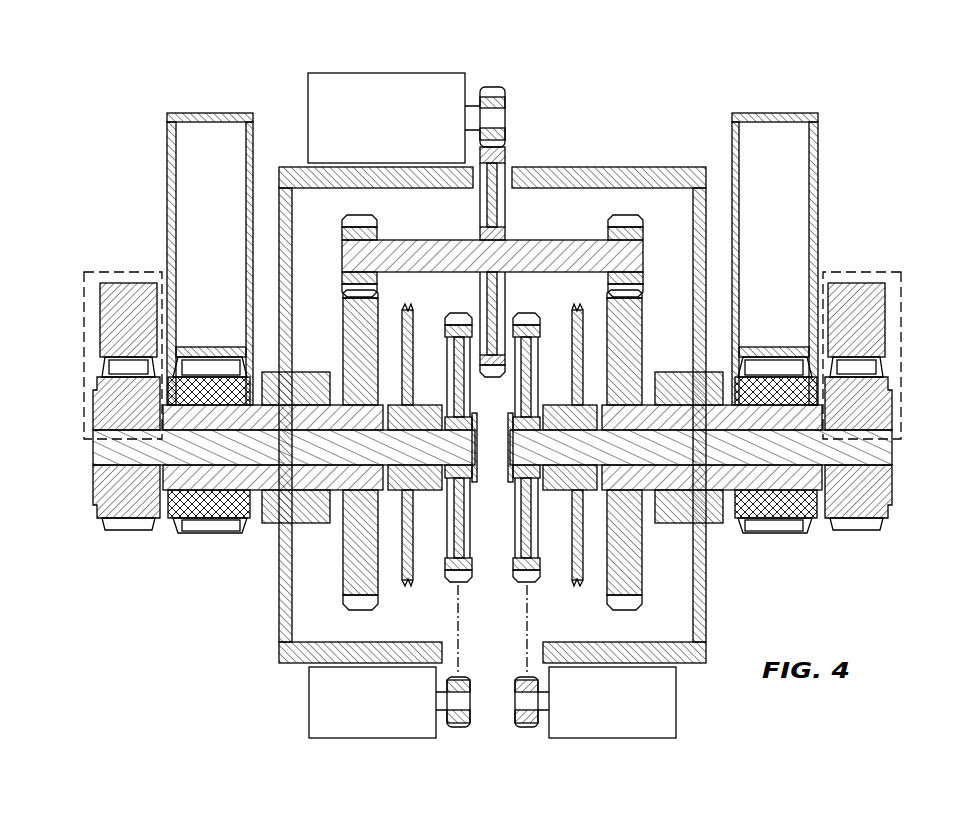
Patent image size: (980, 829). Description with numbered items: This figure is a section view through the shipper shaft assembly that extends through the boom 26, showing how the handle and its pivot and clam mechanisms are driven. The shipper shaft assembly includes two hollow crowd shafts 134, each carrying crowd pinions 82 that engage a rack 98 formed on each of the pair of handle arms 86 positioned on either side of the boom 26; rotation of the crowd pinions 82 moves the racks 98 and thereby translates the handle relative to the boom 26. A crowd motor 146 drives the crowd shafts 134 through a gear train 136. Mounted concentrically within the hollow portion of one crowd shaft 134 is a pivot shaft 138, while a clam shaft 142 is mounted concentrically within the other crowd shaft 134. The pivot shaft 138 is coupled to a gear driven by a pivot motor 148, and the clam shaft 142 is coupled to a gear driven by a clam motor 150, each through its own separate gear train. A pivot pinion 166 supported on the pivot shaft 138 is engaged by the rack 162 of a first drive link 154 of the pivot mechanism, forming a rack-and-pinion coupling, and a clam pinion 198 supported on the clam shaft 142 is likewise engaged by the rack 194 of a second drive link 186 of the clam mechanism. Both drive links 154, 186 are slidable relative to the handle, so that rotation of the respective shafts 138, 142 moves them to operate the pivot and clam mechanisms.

The boom 26 is at (279, 612).
The crowd pinion 82 is at (205, 515).
The arm 86 is at (167, 170).
The rack 98 is at (200, 368).
The crowd shaft 134 is at (313, 417).
The gear train 136 is at (524, 226).
The pivot shaft 138 is at (112, 443).
The clam shaft 142 is at (878, 450).
The crowd motor 146 is at (450, 58).
The pivot motor 148 is at (357, 748).
The clam motor 150 is at (623, 748).
The first drive link 154 is at (112, 313).
The rack 162 is at (128, 370).
The pivot pinion 166 is at (110, 498).
The second drive link 186 is at (872, 313).
The rack 194 is at (858, 378).
The clam pinion 198 is at (875, 497).